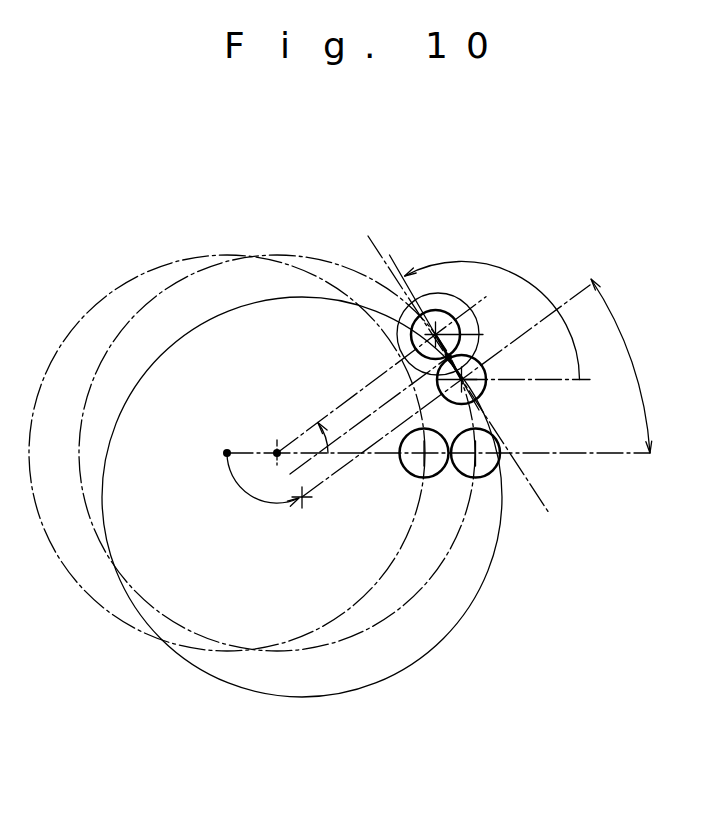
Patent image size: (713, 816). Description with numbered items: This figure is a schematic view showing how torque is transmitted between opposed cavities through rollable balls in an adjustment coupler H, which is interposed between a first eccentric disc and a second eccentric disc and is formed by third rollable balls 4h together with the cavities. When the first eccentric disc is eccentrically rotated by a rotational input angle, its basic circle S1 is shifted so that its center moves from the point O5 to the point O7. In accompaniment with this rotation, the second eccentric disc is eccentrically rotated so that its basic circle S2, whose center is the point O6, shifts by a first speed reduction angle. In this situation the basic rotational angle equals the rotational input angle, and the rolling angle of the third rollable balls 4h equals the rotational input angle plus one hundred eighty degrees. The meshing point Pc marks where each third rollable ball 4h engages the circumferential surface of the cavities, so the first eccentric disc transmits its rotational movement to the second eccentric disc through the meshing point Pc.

The center point of basic circle S1 O5 is at (229, 436).
The center of basic circle S2 O6 is at (279, 441).
The shifted center point of basic circle S1 O7 is at (317, 511).
The meshing point Pc is at (482, 347).
The adjustment coupler H is at (482, 347).
The third rollable balls 4h is at (484, 392).
The basic circle of the first eccentric disc S1 is at (443, 640).
The basic circle of the second eccentric disc S2 is at (442, 565).